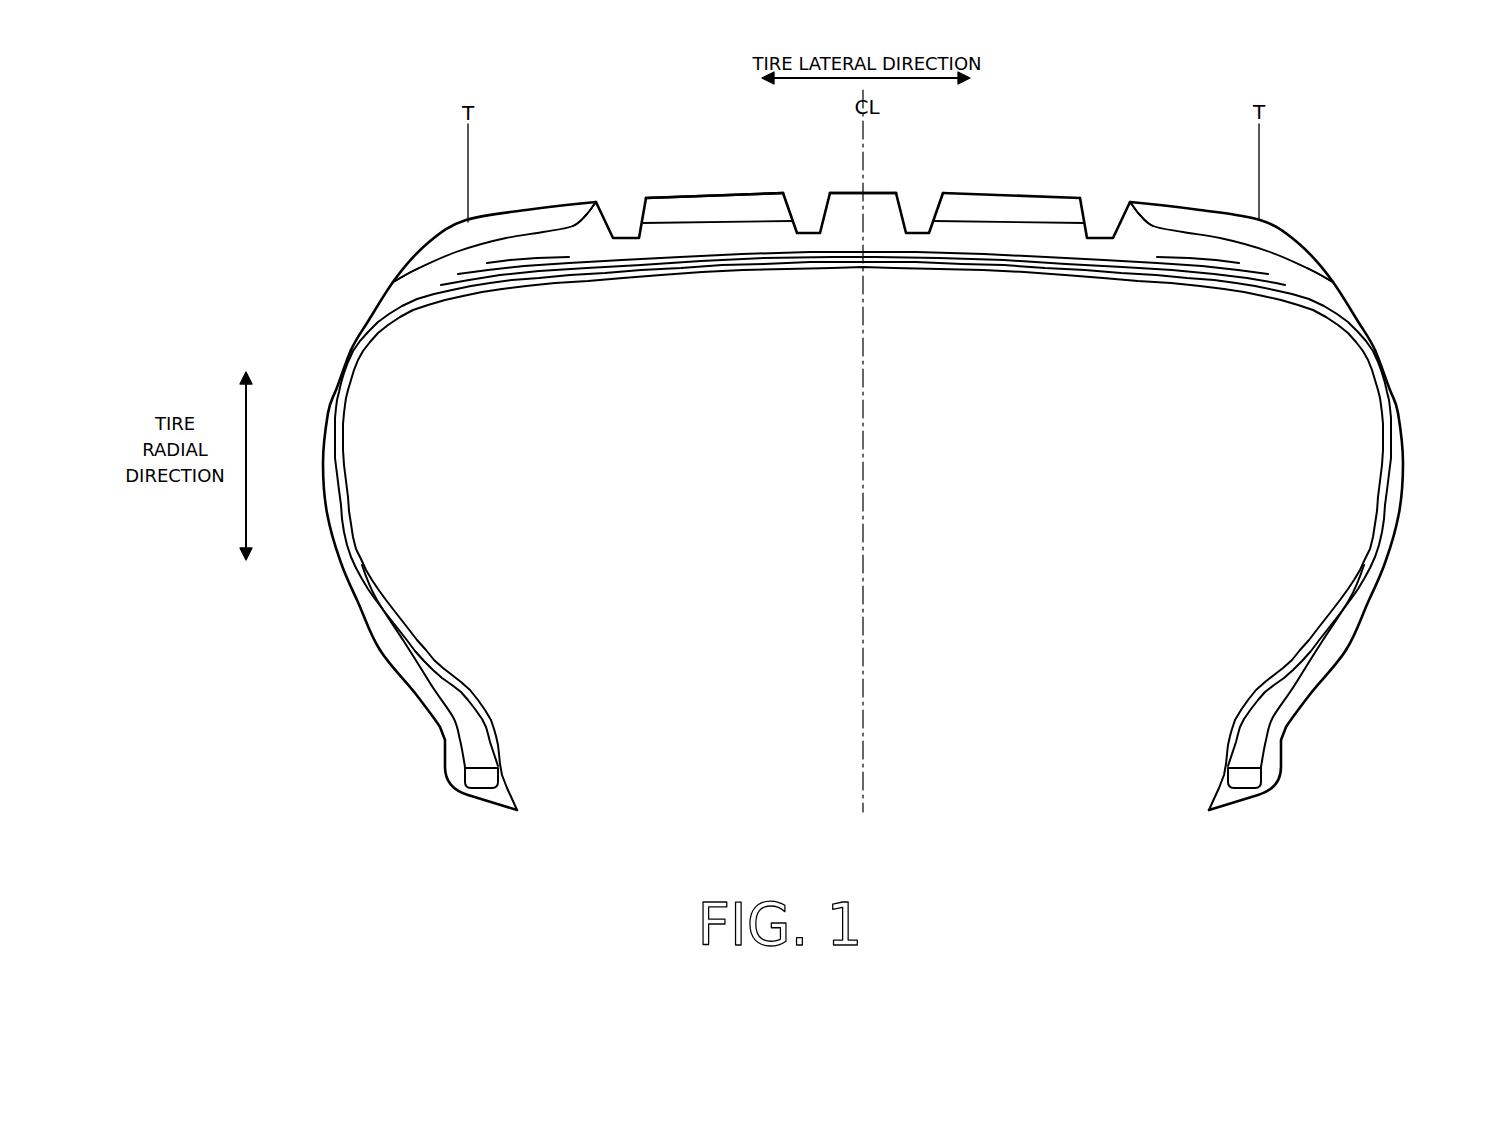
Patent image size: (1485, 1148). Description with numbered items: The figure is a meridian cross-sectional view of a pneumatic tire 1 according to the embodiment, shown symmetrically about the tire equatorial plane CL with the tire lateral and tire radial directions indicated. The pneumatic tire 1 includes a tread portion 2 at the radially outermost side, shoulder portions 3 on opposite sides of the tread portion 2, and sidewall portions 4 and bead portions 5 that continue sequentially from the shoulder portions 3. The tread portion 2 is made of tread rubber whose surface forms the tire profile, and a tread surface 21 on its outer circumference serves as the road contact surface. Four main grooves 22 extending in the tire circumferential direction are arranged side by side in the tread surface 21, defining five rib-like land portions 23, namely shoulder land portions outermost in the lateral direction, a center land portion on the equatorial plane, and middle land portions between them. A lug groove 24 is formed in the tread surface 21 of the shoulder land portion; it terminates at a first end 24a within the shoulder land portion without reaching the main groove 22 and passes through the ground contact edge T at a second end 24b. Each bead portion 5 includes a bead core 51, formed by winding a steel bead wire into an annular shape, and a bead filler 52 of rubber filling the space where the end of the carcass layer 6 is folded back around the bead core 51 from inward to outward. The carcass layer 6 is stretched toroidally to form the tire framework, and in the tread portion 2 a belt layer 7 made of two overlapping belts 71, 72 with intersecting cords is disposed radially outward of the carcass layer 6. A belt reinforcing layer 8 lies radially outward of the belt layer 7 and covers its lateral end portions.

The pneumatic tire 1 is at (1067, 149).
The tread portion 2 is at (726, 199).
The tread surface 21 is at (686, 195).
The main groove 22 is at (1088, 218).
The land portion 23 is at (1175, 218).
The lug groove 24 is at (1215, 233).
The first end 24a is at (1140, 205).
The second end 24b is at (1340, 283).
The shoulder portion 3 is at (1315, 250).
The sidewall portion 4 is at (1408, 424).
The bead portion 5 is at (1293, 760).
The bead core 51 is at (1236, 777).
The bead filler 52 is at (1250, 714).
The carcass layer 6 is at (1025, 260).
The belt layer 7 is at (752, 336).
The belt 71 is at (680, 263).
The belt 72 is at (730, 269).
The belt reinforcing layer 8 is at (1148, 254).